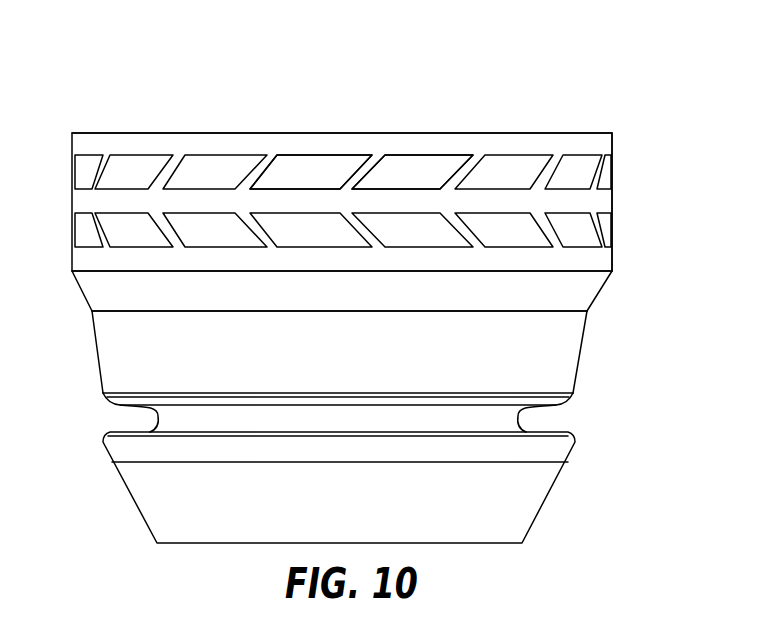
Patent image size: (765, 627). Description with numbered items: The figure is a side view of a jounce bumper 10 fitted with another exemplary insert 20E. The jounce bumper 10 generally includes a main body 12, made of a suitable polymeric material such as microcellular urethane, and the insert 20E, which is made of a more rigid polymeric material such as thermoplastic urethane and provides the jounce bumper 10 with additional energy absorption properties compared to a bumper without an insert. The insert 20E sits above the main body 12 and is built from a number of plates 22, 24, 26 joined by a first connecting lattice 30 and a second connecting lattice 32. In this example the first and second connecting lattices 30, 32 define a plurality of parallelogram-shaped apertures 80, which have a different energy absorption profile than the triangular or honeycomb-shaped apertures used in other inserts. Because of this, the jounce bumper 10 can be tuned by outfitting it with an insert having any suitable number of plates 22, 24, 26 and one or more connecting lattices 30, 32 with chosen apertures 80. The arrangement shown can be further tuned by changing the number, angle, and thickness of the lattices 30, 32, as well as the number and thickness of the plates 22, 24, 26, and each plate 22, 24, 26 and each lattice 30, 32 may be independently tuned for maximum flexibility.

The jounce bumper 10 is at (163, 88).
The main body 12 is at (123, 347).
The insert 20E is at (71, 146).
The plate 22 is at (602, 145).
The plate 24 is at (602, 200).
The plate 26 is at (603, 258).
The first connecting lattice 30 is at (95, 177).
The second connecting lattice 32 is at (97, 238).
The parallelogram-shaped apertures 80 is at (302, 156).